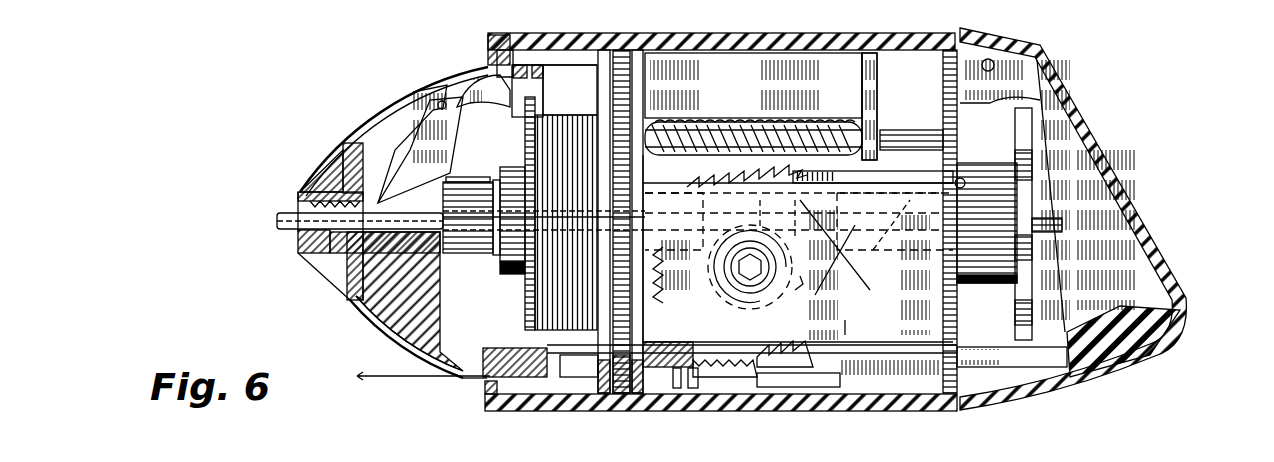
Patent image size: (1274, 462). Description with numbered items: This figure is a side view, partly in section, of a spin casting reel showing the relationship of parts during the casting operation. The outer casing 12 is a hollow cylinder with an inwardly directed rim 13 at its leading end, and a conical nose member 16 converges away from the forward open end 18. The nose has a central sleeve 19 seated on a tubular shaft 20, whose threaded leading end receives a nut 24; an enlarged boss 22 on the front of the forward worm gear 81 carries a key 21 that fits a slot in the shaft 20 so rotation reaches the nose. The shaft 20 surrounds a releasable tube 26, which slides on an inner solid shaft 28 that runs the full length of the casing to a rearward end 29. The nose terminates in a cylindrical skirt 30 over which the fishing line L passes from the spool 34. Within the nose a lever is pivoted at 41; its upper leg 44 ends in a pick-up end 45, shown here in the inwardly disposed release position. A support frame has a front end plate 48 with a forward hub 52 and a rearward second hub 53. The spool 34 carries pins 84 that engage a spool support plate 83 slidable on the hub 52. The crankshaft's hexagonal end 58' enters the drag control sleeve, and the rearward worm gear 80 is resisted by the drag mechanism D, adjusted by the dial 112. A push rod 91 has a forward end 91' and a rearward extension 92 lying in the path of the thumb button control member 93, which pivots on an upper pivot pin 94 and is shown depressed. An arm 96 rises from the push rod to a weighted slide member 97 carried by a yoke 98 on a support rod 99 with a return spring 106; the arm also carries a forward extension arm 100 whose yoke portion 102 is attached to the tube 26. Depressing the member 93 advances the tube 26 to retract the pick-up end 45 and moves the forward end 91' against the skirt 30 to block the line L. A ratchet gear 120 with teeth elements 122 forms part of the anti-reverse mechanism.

The outer casing 12 is at (770, 33).
The inwardly directed rim 13 is at (483, 388).
The conical nose member 16 is at (388, 110).
The forward open end 18 is at (487, 40).
The central sleeve 19 is at (330, 282).
The tubular shaft 20 is at (430, 270).
The key 21 is at (443, 182).
The enlarged boss 22 is at (488, 256).
The nut 24 is at (298, 193).
The releasable tube 26 is at (437, 253).
The inner concentric solid shaft 28 is at (277, 216).
The rearward end 29 is at (1063, 217).
The cylindrical skirt 30 is at (560, 363).
The spool 34 is at (535, 113).
The pivot 41 is at (445, 78).
The upper leg 44 is at (466, 77).
The pick-up end 45 is at (505, 50).
The front end plate 48 is at (637, 53).
The hub 52 is at (508, 167).
The second hub 53 is at (980, 287).
The hexagonal end 58' is at (750, 280).
The worm gear 80 is at (897, 264).
The worm gear 81 is at (675, 255).
The spool support plate 83 is at (623, 377).
The pins 84 is at (617, 143).
The push rod 91 is at (929, 243).
The forward end 91' is at (582, 396).
The rearward extension 92 is at (1003, 362).
The thumb button control member 93 is at (1180, 298).
The upper pivot pin 94 is at (988, 58).
The arm 96 is at (850, 325).
The weighted slide member 97 is at (720, 63).
The yoke 98 is at (870, 55).
The support rod 99 is at (883, 133).
The forward extension arm 100 is at (837, 267).
The yoke portion 102 is at (837, 290).
The return spring 106 is at (700, 123).
The dial 112 is at (1028, 133).
The ratchet gear 120 is at (747, 348).
The teeth elements 122 is at (802, 348).
The drag mechanism D is at (970, 167).
The fishing line L is at (423, 382).